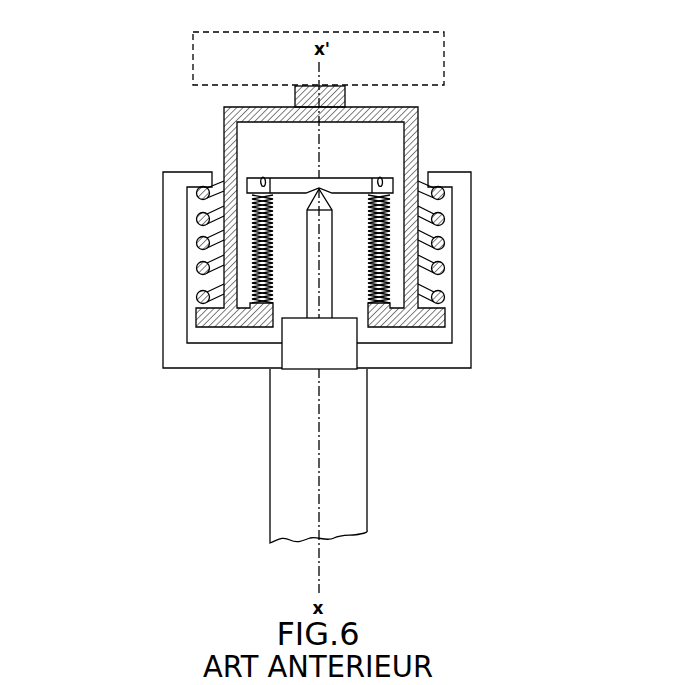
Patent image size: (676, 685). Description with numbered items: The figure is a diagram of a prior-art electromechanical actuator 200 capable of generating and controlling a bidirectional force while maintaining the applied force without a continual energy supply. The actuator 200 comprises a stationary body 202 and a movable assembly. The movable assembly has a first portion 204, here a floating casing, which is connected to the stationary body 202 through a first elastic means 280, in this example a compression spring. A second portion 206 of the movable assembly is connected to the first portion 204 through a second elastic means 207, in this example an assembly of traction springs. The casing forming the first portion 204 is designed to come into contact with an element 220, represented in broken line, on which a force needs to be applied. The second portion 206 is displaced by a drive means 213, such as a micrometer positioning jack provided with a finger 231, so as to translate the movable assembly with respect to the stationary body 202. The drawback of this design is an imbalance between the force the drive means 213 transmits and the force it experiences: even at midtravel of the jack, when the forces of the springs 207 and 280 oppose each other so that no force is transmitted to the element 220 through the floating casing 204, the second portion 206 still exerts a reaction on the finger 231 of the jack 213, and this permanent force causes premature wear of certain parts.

The actuator 200 is at (483, 163).
The stationary body 202 is at (170, 207).
The first portion 204 is at (232, 115).
The second portion 206 is at (347, 185).
The second elastic means 207 is at (252, 215).
The drive means 213 is at (344, 437).
The element 220 is at (443, 46).
The finger 231 is at (318, 283).
The first elastic means 280 is at (440, 188).